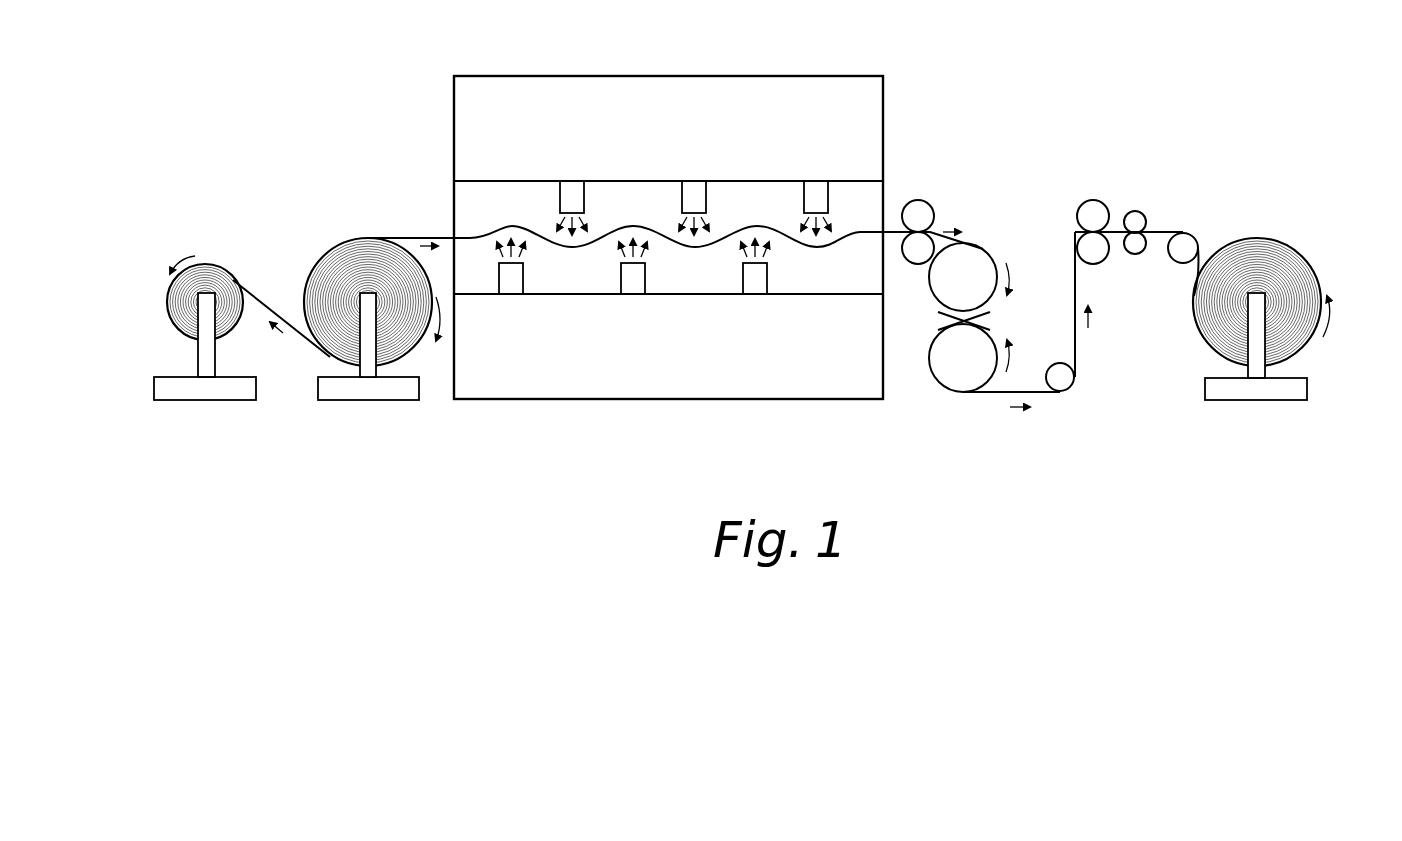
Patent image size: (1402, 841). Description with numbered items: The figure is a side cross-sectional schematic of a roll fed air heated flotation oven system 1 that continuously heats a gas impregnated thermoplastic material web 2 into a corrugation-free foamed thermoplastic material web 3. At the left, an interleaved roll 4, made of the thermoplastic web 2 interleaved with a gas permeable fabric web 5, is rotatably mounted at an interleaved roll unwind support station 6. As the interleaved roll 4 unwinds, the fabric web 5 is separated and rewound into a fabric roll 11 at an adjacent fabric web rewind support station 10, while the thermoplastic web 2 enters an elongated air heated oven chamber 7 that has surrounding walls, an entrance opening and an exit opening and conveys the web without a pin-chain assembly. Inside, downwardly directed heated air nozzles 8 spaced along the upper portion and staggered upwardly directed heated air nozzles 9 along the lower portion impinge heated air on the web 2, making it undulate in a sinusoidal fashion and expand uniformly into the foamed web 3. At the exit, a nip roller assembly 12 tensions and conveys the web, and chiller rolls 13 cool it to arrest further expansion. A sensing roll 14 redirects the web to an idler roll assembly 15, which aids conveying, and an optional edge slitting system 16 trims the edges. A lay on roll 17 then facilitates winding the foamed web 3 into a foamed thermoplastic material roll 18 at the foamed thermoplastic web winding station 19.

The roll fed air heated flotation oven system 1 is at (502, 75).
The gas impregnated thermoplastic material web 2 is at (428, 237).
The corrugation-free foamed thermoplastic material web 3 is at (893, 229).
The interleaved roll 4 is at (345, 240).
The gas permeable fabric web 5 is at (270, 297).
The interleaved roll unwind support station 6 is at (368, 303).
The elongated air heated oven chamber 7 is at (472, 205).
The downwardly directed heated air nozzles 8 is at (573, 193).
The upwardly directed heated air nozzles 9 is at (510, 285).
The fabric web rewind support station 10 is at (205, 303).
The fabric roll 11 is at (218, 263).
The nip roller assembly 12 is at (930, 210).
The chiller rolls 13 is at (990, 252).
The sensing roll 14 is at (1070, 390).
The idler roll assembly 15 is at (1085, 200).
The edge slitting system 16 is at (1137, 211).
The lay on roll 17 is at (1177, 262).
The foamed thermoplastic material roll 18 is at (1280, 242).
The foamed thermoplastic web winding station 19 is at (1258, 305).